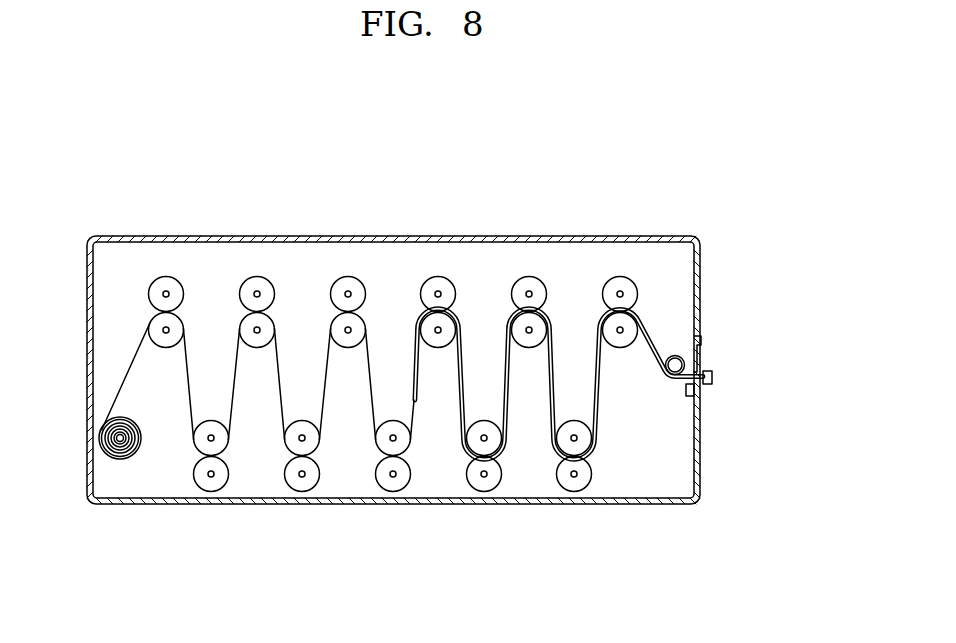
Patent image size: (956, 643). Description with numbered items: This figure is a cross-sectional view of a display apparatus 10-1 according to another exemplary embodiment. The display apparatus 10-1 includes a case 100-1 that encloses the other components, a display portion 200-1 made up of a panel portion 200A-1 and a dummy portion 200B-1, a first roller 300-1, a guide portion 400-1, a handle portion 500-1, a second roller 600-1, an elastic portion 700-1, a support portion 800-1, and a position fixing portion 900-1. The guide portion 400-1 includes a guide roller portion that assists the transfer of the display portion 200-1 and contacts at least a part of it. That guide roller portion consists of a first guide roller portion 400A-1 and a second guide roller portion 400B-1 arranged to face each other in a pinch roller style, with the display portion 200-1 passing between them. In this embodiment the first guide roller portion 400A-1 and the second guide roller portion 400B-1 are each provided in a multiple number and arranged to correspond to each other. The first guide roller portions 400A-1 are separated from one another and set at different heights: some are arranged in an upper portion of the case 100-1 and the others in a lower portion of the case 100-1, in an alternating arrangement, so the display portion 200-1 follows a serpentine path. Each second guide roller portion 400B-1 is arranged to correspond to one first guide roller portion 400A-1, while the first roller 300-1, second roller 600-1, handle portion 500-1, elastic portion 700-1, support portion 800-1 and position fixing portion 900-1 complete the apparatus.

The display apparatus 10-1 is at (420, 143).
The case 100-1 is at (573, 236).
The display portion 200-1 is at (393, 504).
The panel portion 200A-1 is at (419, 392).
The dummy portion 200B-1 is at (367, 390).
The first roller 300-1 is at (131, 463).
The guide portion 400-1 is at (393, 244).
The first guide roller portion 400A-1 is at (168, 272).
The second guide roller portion 400B-1 is at (187, 318).
The handle portion 500-1 is at (712, 385).
The second roller 600-1 is at (675, 350).
The elastic portion 700-1 is at (110, 447).
The support portion 800-1 is at (693, 404).
The position fixing portion 900-1 is at (707, 337).